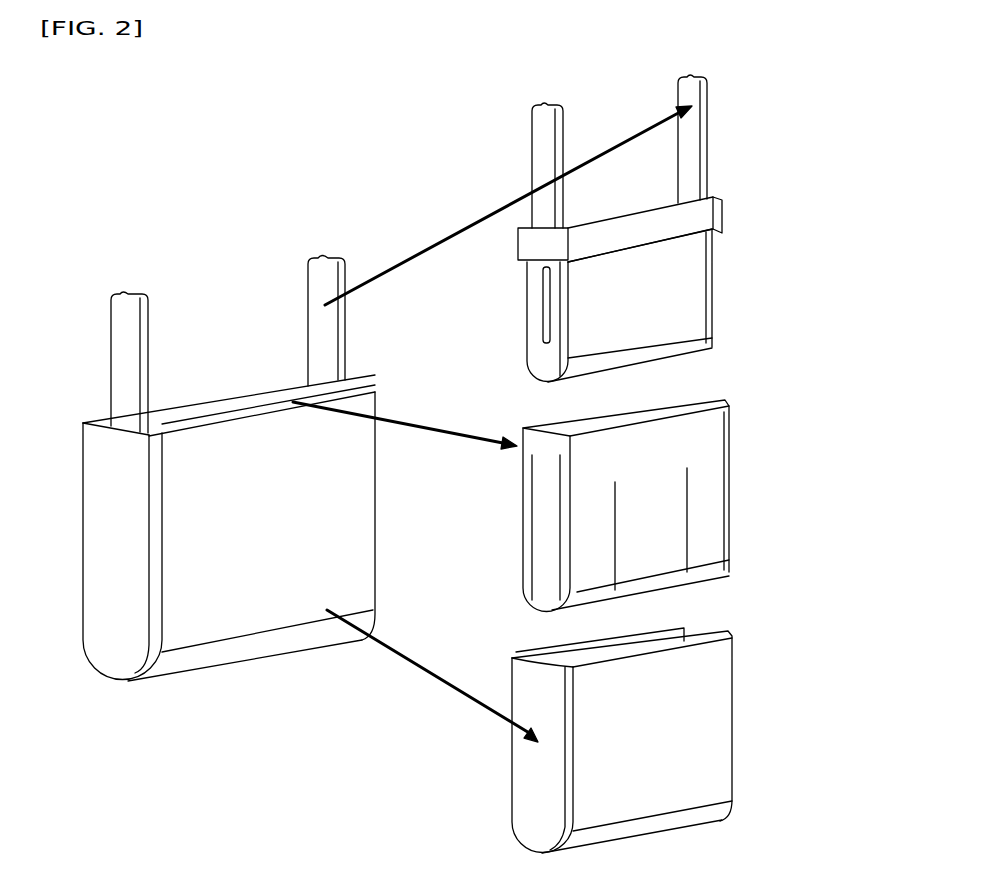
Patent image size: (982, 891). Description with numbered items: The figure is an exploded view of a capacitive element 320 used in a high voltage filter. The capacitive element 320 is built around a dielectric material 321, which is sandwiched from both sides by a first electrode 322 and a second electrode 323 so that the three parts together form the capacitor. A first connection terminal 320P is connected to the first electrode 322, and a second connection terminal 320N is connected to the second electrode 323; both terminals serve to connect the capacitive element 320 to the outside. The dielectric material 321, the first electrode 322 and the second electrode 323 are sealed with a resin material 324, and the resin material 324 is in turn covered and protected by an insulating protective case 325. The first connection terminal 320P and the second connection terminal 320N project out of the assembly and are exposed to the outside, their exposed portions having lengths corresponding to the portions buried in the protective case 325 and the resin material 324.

The capacitive element 320 is at (214, 276).
The second connection terminal 320N is at (537, 153).
The first connection terminal 320P is at (703, 163).
The dielectric material 321 is at (613, 220).
The first electrode 322 is at (713, 292).
The second electrode 323 is at (530, 307).
The resin material 324 is at (715, 498).
The protective case 325 is at (727, 700).